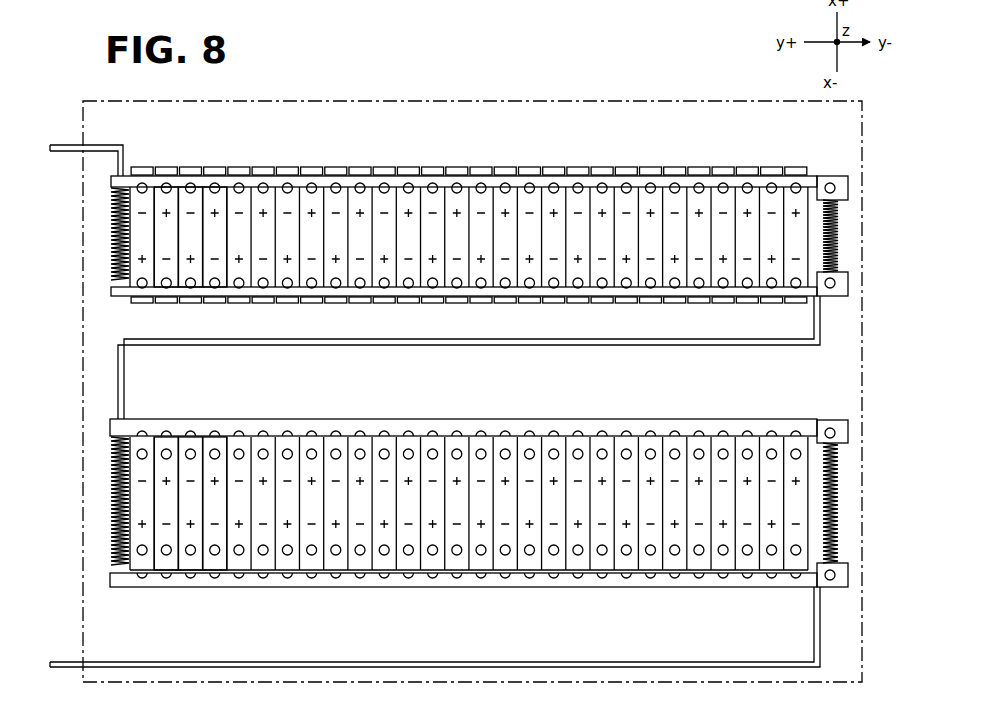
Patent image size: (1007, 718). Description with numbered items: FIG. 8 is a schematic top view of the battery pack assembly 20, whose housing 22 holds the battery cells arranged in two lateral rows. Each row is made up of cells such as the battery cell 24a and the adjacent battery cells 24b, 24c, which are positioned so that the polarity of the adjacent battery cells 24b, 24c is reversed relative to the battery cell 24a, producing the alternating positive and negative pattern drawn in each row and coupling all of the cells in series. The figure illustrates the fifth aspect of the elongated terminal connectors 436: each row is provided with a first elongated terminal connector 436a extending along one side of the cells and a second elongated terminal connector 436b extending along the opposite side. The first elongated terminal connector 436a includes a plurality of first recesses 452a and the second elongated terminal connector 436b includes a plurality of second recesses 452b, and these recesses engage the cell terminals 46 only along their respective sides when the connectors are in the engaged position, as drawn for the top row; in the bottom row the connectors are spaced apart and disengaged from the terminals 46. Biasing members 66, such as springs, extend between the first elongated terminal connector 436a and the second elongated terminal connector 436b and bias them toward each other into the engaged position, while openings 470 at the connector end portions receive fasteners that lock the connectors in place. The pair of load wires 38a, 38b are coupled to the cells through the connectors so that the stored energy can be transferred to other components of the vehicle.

The battery pack assembly 20 is at (378, 88).
The housing 22 is at (80, 256).
The battery cell 24a is at (188, 167).
The adjacent battery cell 24b is at (173, 167).
The adjacent battery cell 24c is at (217, 167).
The load wire 38a is at (72, 145).
The load wire 38b is at (70, 662).
The cell terminal 46 is at (385, 186).
The biasing member 66 is at (112, 222).
The elongated terminal connectors 436 is at (494, 416).
The first elongated terminal connector 436a is at (833, 171).
The second elongated terminal connector 436b is at (830, 302).
The first recesses 452a is at (312, 186).
The second recesses 452b is at (167, 285).
The pin 470 is at (847, 185).